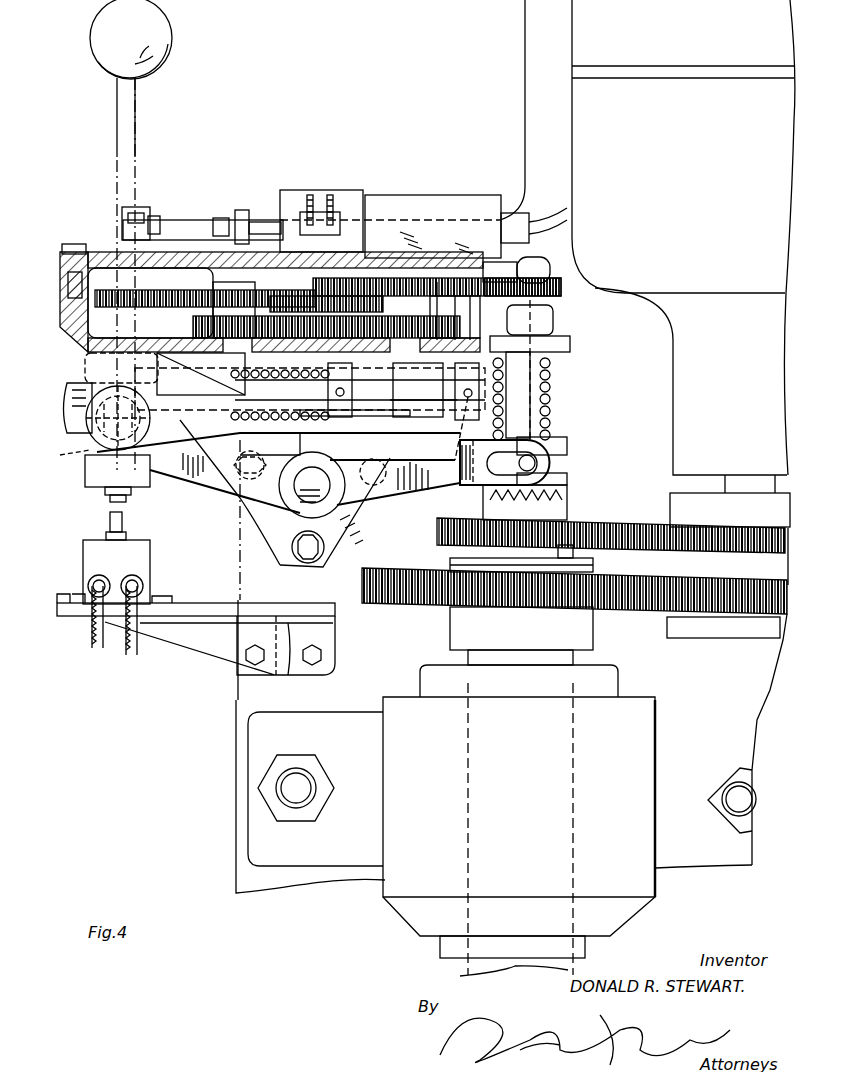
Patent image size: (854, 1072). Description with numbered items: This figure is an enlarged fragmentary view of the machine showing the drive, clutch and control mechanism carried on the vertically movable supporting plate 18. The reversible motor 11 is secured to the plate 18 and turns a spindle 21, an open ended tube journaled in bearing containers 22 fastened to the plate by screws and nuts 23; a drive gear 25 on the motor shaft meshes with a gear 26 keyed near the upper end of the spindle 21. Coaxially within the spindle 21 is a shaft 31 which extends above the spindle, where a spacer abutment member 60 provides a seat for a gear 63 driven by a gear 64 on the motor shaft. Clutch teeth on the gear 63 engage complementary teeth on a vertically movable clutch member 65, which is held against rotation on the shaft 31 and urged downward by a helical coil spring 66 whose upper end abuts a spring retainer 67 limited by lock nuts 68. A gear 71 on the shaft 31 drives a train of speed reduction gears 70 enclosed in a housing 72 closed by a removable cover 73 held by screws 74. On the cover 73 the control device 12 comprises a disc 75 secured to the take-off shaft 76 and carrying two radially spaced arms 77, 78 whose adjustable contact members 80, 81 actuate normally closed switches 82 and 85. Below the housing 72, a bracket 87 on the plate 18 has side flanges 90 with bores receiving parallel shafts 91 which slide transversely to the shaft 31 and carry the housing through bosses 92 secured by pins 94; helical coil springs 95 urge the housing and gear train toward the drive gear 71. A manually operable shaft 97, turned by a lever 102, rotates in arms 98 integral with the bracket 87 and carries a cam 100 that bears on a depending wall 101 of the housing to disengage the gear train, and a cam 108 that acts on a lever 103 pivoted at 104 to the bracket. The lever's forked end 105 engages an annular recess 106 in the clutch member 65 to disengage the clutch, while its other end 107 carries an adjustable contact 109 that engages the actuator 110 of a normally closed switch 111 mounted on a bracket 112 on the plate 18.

The motor 11 is at (683, 292).
The control device 12 is at (366, 167).
The supporting plate 18 is at (238, 700).
The spindle 21 is at (572, 770).
The bearing containers 22 is at (640, 790).
The screws and nuts 23 is at (302, 770).
The drive gear 25 is at (742, 617).
The gear 26 is at (418, 598).
The shaft 31 is at (552, 406).
The spacer abutment member 60 is at (498, 552).
The gear 63 is at (438, 530).
The gear 64 is at (655, 520).
The clutch member 65 is at (567, 478).
The helical coil spring 66 is at (555, 378).
The spring retainer 67 is at (570, 344).
The lock nuts 68 is at (553, 322).
The speed reduction gears 70 is at (313, 282).
The gear 71 is at (564, 290).
The housing 72 is at (60, 322).
The cover 73 is at (96, 252).
The screws 74 is at (68, 278).
The disc 75 is at (197, 222).
The vertical shaft 76 is at (222, 280).
The arm 77 is at (124, 210).
The arm 78 is at (245, 210).
The contact member 80 is at (227, 218).
The contact member 81 is at (153, 214).
The switch 82 is at (296, 192).
The switch 85 is at (439, 194).
The bracket 87 is at (243, 500).
The side flanges 90 is at (310, 385).
The shafts 91 is at (378, 408).
The bosses 92 is at (175, 400).
The pins 94 is at (180, 425).
The helical coil springs 95 is at (258, 476).
The shaft 97 is at (62, 456).
The arms 98 is at (180, 455).
The cam 100 is at (100, 378).
The depending wall 101 is at (69, 400).
The lever 102 is at (137, 136).
The lever 103 is at (283, 540).
The pivot 104 is at (338, 525).
The forked end 105 is at (480, 485).
The annular recess 106 is at (567, 457).
The lever end 107 is at (90, 474).
The cam 108 is at (88, 426).
The adjustable contact 109 is at (106, 497).
The actuator 110 is at (124, 522).
The switch 111 is at (82, 562).
The bracket 112 is at (208, 623).